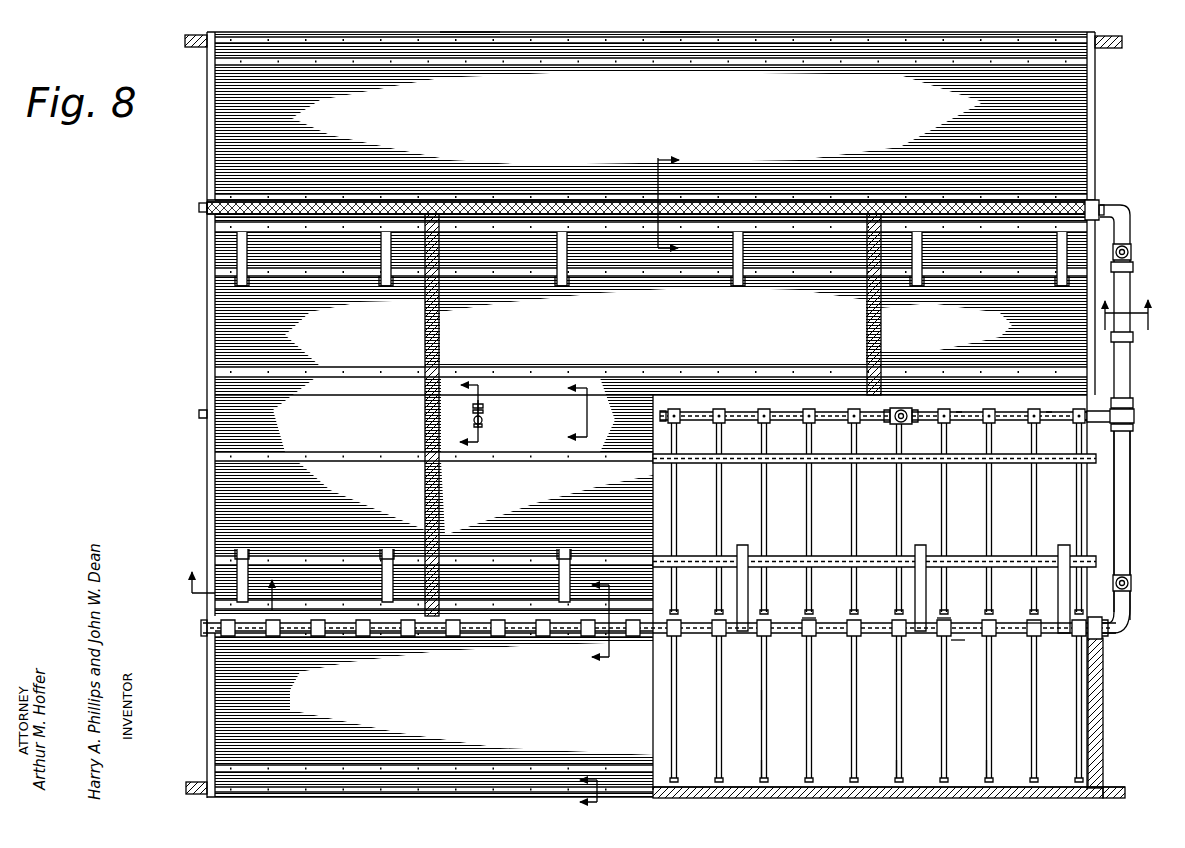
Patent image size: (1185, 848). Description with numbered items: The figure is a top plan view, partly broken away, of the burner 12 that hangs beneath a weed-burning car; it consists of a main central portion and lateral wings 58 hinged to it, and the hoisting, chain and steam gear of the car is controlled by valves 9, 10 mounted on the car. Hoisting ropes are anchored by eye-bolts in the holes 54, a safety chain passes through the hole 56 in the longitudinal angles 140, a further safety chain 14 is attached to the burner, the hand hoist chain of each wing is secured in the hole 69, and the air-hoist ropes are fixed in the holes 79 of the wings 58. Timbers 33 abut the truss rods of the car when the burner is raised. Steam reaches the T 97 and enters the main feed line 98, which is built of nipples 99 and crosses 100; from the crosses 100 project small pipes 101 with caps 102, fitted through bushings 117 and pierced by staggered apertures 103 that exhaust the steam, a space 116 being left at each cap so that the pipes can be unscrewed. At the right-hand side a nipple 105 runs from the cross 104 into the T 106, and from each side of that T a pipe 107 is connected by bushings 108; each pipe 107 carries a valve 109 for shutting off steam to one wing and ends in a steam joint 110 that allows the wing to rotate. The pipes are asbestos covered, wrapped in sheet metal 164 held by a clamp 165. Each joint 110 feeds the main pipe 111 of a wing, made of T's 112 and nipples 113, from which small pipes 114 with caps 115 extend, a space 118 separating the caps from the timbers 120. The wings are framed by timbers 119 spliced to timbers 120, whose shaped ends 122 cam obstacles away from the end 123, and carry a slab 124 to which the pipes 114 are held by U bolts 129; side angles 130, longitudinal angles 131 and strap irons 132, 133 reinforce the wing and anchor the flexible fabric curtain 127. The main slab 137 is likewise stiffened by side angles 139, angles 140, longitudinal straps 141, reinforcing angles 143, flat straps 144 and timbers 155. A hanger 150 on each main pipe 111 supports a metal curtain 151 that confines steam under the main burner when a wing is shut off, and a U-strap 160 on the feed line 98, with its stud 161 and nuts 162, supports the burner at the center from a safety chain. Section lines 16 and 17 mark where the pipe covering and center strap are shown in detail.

The valve 9 is at (580, 596).
The valve 10 is at (681, 204).
The burner 12 is at (155, 356).
The safety chain 14 is at (238, 581).
The section line 16- 16 is at (1129, 305).
The section line 17- 17 is at (487, 414).
The timber 33 is at (882, 337).
The hole 54 is at (300, 272).
The hole 56 is at (242, 284).
The lateral wing 58 is at (651, 414).
The hole 69 is at (672, 34).
The hole 79 is at (468, 34).
The T 97 is at (905, 422).
The main feed line 98 is at (873, 425).
The nipple 99 is at (876, 424).
The cross 100 is at (683, 425).
The small pipe 101 is at (764, 524).
The cap 102 is at (756, 614).
The aperture 103 is at (852, 532).
The cross 104 is at (1079, 424).
The nipple 105 is at (1100, 416).
The T 106 is at (1133, 414).
The pipe 107 is at (1131, 450).
The bushing 108 is at (1133, 430).
The valve 109 is at (1131, 252).
The steam joint 110 is at (1103, 206).
The main pipe 111 is at (956, 632).
The T 112 is at (810, 618).
The nipple 113 is at (822, 630).
The small pipe 114 is at (762, 702).
The cap 115 is at (767, 778).
The space 116 is at (944, 618).
The bushing 117 is at (968, 420).
The space 118 is at (890, 778).
The timber 119 is at (207, 685).
The timber 120 is at (960, 788).
The shaped end 122 is at (200, 48).
The end 123 is at (188, 40).
The slab 124 is at (498, 459).
The flexible fabric curtain 127 is at (540, 34).
The U bolt 129 is at (815, 86).
The side angle 130 is at (207, 130).
The longitudinal angle 131 is at (585, 106).
The strap iron 132 is at (830, 184).
The strap iron 133 is at (945, 42).
The slab 137 is at (434, 391).
The side angle 139 is at (207, 287).
The longitudinal angle 140 is at (518, 280).
The longitudinal strap 141 is at (388, 448).
The reinforcing angle 143 is at (471, 228).
The flat strap 144 is at (470, 610).
The hanger 150 is at (990, 618).
The metal curtain 151 is at (1030, 632).
The timber 155 is at (215, 322).
The U-strap 160 is at (485, 420).
The stud 161 is at (485, 406).
The nut 162 is at (473, 406).
The sheet metal 164 is at (1129, 354).
The clamp 165 is at (1133, 266).